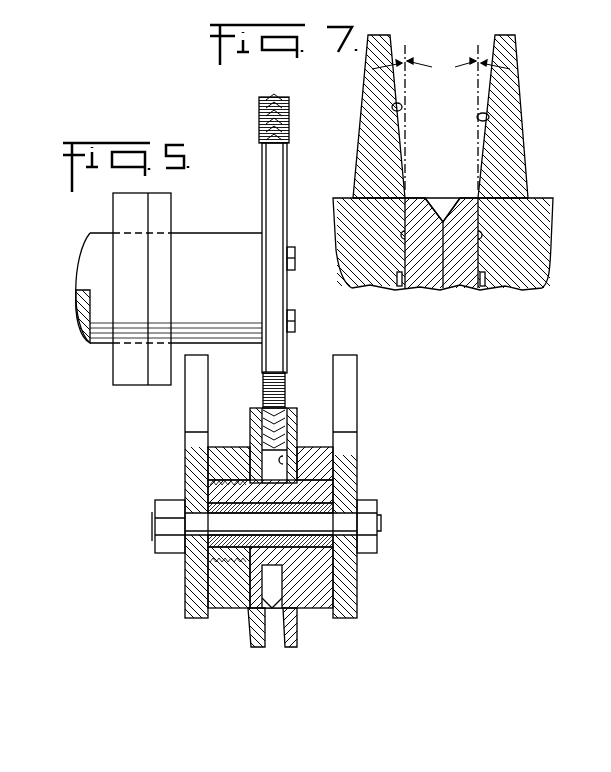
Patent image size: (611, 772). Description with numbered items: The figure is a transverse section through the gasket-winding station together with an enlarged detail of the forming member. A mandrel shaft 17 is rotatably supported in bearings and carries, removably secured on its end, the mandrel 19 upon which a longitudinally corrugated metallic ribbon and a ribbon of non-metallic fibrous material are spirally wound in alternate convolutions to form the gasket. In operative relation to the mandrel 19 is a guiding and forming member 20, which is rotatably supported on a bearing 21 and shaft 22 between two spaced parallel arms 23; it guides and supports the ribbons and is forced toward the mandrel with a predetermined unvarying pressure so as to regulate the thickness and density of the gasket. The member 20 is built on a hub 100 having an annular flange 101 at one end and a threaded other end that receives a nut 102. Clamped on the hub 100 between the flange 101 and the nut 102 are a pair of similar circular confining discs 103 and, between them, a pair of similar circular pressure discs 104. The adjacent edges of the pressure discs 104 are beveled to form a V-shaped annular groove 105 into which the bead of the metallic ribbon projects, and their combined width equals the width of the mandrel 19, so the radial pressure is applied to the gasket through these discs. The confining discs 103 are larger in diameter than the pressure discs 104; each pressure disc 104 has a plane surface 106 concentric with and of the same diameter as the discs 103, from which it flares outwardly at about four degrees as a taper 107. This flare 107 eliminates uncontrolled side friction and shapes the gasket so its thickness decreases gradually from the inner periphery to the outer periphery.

In FIG. 5, the mandrel shaft 17 is at (169, 289).
In FIG. 5, the mandrel 19 is at (266, 198).
In FIG. 5, the guiding and forming member 20 is at (313, 466).
In FIG. 5, the bearing 21 is at (335, 508).
In FIG. 5, the shaft 22 is at (345, 523).
In FIG. 5, the arms 23 is at (188, 596).
In FIG. 5, the hub 100 is at (230, 562).
In FIG. 5, the annular flange 101 is at (320, 600).
In FIG. 7, the annular flange 101 is at (545, 205).
In FIG. 5, the nut 102 is at (216, 458).
In FIG. 7, the nut 102 is at (337, 206).
In FIG. 5, the confining discs 103 is at (250, 419).
In FIG. 7, the confining discs 103 is at (382, 275).
In FIG. 5, the pressure discs 104 is at (252, 625).
In FIG. 7, the pressure discs 104 is at (467, 288).
In FIG. 5, the V-shaped annular groove 105 is at (277, 605).
In FIG. 7, the V-shaped annular groove 105 is at (445, 210).
In FIG. 5, the plane surface 106 is at (284, 461).
In FIG. 7, the plane surface 106 is at (404, 238).
In FIG. 5, the flare 107 is at (262, 648).
In FIG. 7, the flare 107 is at (392, 112).